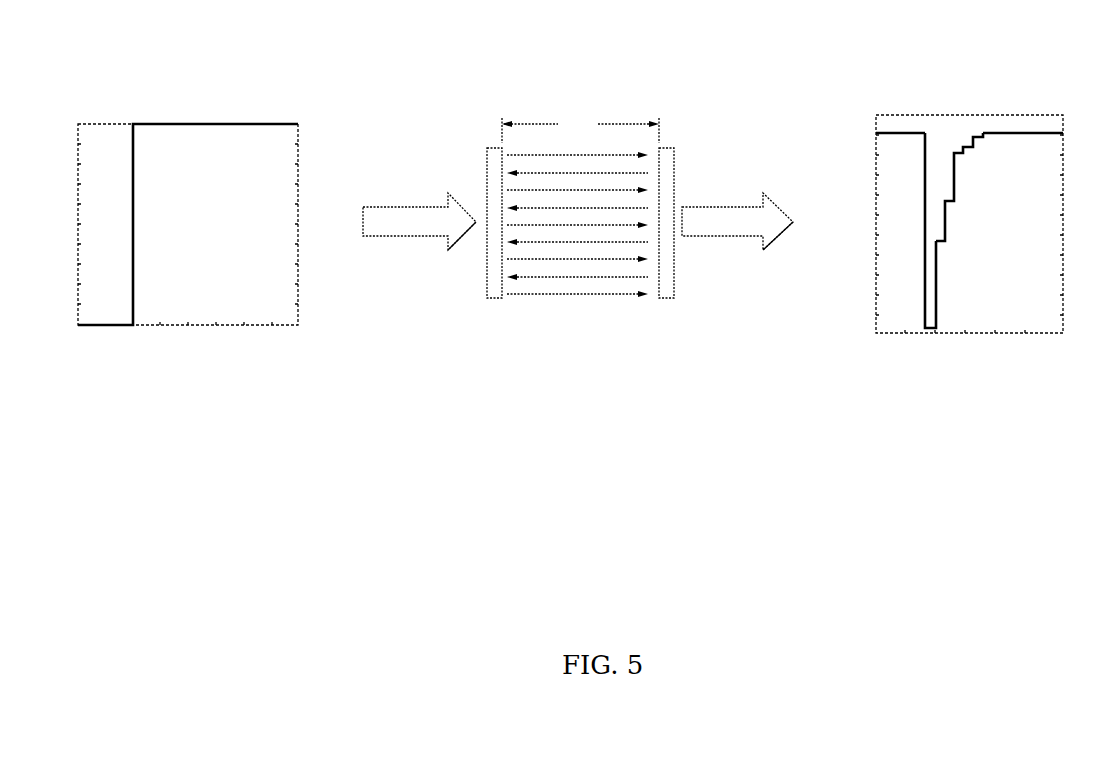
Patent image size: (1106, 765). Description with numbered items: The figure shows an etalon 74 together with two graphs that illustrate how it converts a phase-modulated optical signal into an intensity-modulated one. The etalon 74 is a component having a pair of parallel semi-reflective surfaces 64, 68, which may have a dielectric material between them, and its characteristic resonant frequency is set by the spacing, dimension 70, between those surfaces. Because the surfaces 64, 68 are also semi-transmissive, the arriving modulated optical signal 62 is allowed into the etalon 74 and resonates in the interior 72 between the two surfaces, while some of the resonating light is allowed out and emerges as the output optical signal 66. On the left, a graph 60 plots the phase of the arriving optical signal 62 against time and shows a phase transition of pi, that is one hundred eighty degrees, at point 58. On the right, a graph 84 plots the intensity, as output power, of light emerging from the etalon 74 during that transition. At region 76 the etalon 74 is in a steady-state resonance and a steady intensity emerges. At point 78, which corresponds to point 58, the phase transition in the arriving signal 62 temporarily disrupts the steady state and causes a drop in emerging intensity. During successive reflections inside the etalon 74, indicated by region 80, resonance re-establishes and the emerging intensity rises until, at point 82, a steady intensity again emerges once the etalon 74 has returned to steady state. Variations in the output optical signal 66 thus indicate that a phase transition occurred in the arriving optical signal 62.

The point 58 is at (130, 113).
The graph 60 is at (221, 87).
The arriving modulated optical signal 62 is at (402, 207).
The semi-reflective surface 64 is at (485, 172).
The output optical signal 66 is at (717, 207).
The semi-reflective surface 68 is at (677, 172).
The dimension 70 is at (580, 129).
The interior 72 is at (582, 303).
The etalon 74 is at (630, 58).
The region 76 is at (893, 122).
The point 78 is at (928, 148).
The region 80 is at (945, 225).
The point 82 is at (1025, 135).
The graph 84 is at (955, 78).